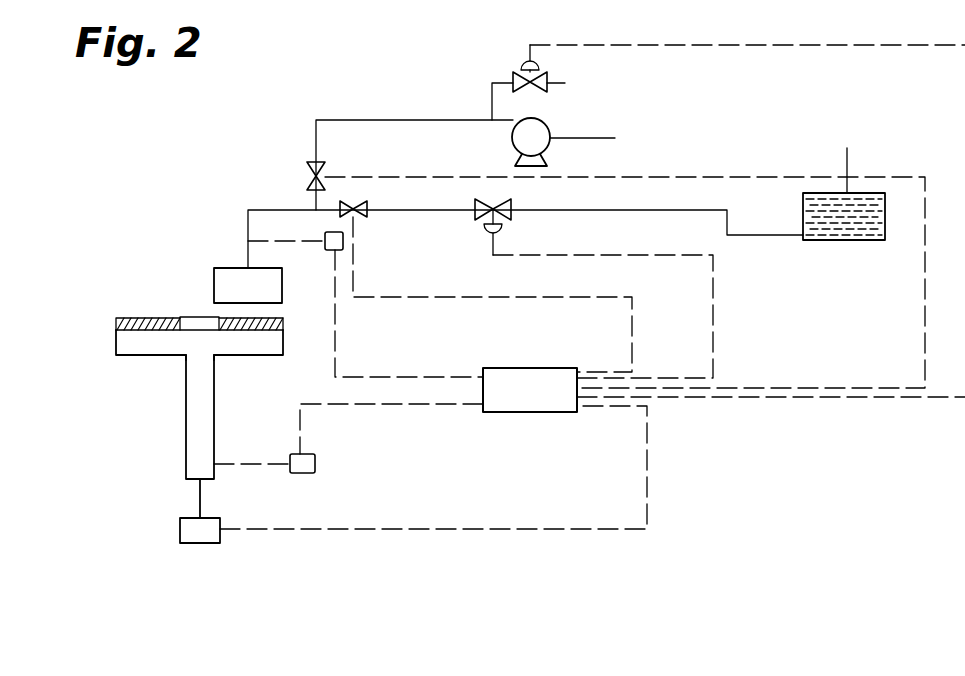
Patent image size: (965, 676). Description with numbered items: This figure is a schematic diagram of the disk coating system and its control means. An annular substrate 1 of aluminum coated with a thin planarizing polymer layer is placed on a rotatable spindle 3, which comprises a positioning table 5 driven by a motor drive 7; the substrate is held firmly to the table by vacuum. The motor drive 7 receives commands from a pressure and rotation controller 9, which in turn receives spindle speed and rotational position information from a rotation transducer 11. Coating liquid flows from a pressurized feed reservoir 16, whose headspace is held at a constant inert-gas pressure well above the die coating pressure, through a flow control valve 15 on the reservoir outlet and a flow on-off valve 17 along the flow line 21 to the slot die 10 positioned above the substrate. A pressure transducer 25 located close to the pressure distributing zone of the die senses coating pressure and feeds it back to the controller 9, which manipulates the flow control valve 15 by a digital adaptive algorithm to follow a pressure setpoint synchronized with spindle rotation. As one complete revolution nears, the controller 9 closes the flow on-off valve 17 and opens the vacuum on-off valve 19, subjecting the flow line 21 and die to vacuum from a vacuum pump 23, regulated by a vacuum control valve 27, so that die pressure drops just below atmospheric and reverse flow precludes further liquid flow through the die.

The annular substrate 1 is at (145, 318).
The rotatable spindle 3 is at (200, 423).
The positioning table 5 is at (155, 345).
The motor drive 7 is at (193, 533).
The pressure and rotation controller 9 is at (522, 382).
The slot die 10 is at (217, 280).
The rotation transducer 11 is at (305, 468).
The flow control valve 15 is at (497, 214).
The pressurized feed reservoir 16 is at (845, 225).
The flow on-off valve 17 is at (356, 212).
The vacuum on-off valve 19 is at (320, 172).
The flow line 21 is at (283, 210).
The vacuum pump 23 is at (536, 133).
The pressure transducer 25 is at (330, 246).
The vacuum control valve 27 is at (518, 76).